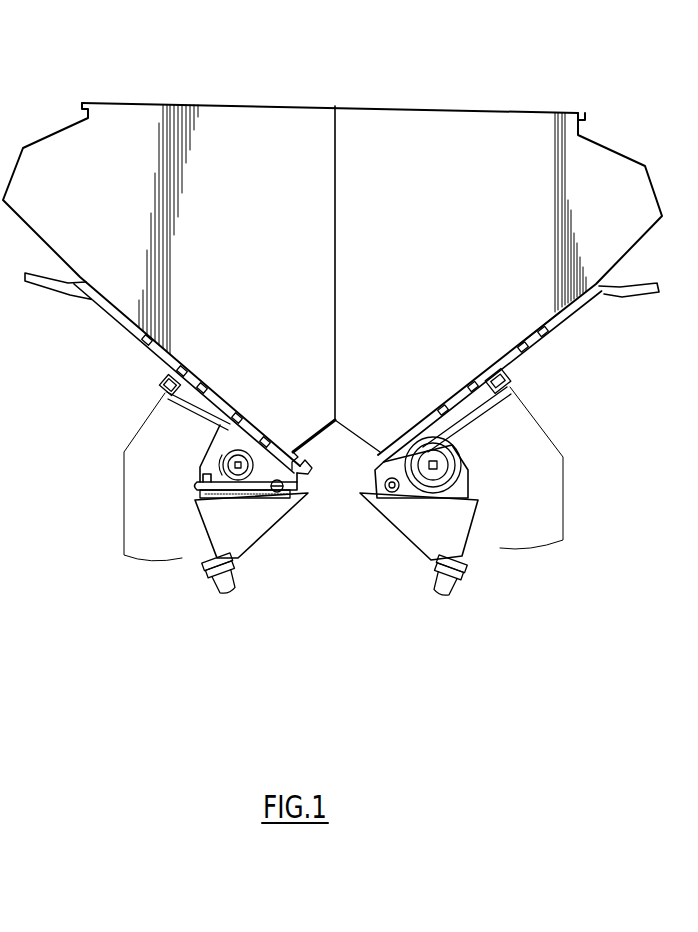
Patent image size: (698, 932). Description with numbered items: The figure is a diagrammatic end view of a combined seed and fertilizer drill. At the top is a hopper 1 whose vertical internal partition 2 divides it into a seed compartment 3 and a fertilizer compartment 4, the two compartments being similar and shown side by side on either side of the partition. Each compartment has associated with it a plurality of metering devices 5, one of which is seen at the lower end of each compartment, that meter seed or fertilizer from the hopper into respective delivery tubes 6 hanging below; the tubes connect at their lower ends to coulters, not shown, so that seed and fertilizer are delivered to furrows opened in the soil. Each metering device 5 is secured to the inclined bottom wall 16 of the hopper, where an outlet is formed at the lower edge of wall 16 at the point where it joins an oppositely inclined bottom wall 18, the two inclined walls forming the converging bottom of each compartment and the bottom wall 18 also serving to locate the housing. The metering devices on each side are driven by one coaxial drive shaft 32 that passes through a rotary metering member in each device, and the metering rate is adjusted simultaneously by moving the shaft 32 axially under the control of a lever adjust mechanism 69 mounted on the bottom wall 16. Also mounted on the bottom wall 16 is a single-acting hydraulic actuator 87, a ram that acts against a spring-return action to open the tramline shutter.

The hopper 1 is at (470, 94).
The vertical internal partition 2 is at (338, 123).
The seed compartment 3 is at (468, 211).
The fertilizer compartment 4 is at (246, 213).
The metering device 5 is at (188, 473).
The delivery tube 6 is at (247, 564).
The bottom wall 16 is at (534, 331).
The oppositely inclined bottom wall 18 is at (358, 437).
The coaxial drive shaft 32 is at (236, 462).
The lever adjust mechanism 69 is at (120, 338).
The single-acting hydraulic actuator 87 is at (509, 380).